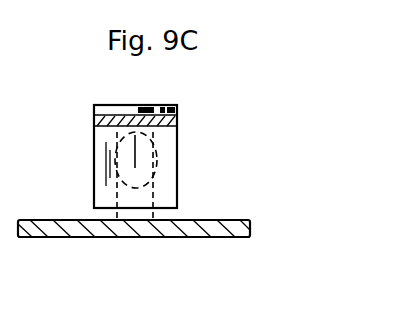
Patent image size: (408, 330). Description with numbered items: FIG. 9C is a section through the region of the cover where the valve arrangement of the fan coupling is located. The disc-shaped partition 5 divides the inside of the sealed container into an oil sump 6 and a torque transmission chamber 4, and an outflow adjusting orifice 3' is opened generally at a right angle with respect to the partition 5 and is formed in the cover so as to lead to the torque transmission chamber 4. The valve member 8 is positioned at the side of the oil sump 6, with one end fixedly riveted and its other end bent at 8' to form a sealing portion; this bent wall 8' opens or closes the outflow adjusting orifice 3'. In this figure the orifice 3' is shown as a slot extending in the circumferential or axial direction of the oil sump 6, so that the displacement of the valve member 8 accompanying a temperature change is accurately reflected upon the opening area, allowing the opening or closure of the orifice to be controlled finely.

The outflow adjusting orifice 3' is at (178, 163).
The torque transmission chamber 4 is at (95, 238).
The partition 5 is at (195, 238).
The oil sump 6 is at (93, 121).
The valve member 8 is at (165, 156).
The bent wall 8' is at (95, 175).